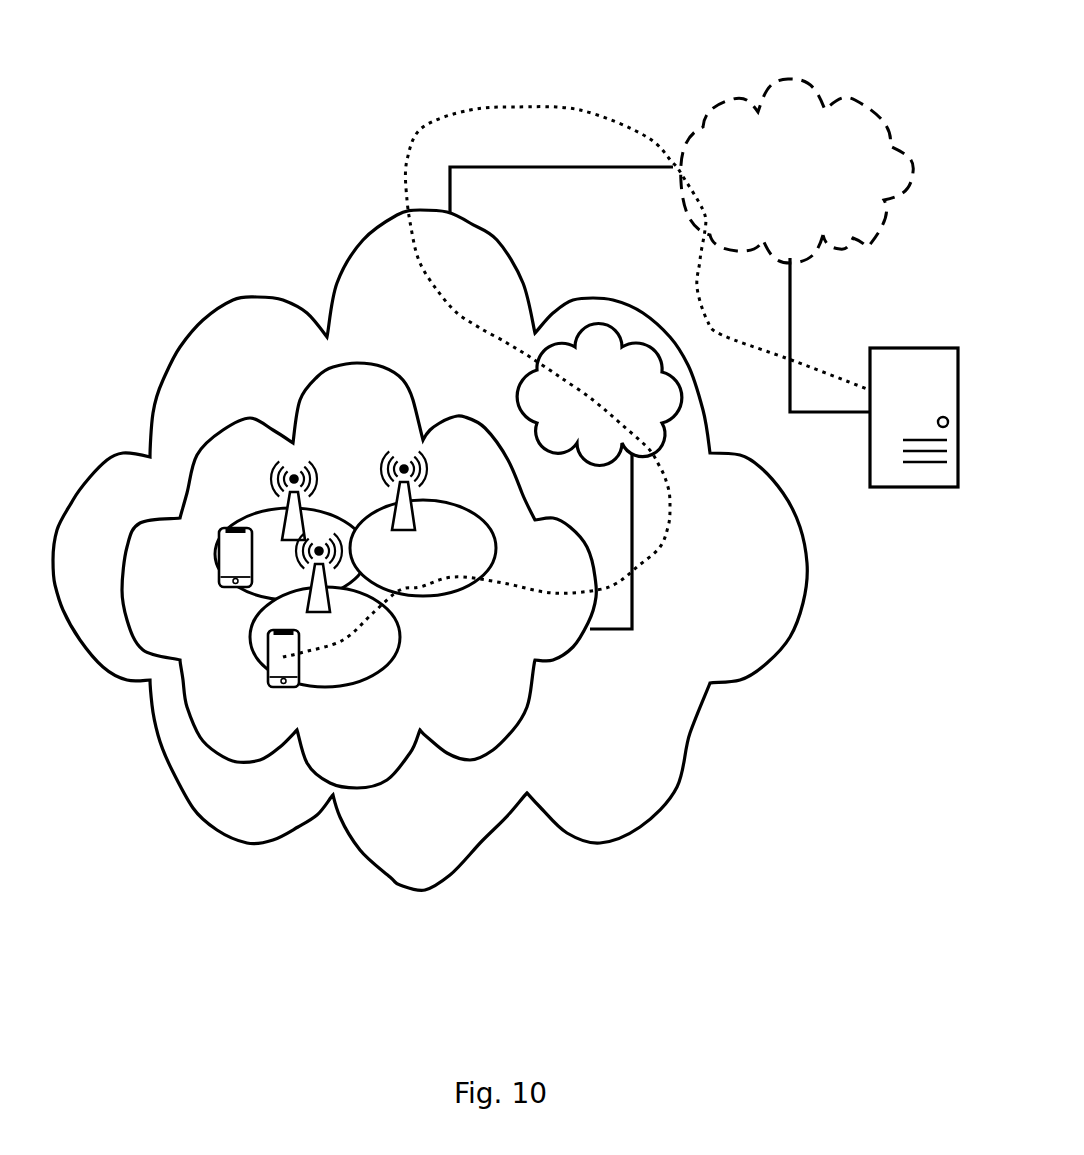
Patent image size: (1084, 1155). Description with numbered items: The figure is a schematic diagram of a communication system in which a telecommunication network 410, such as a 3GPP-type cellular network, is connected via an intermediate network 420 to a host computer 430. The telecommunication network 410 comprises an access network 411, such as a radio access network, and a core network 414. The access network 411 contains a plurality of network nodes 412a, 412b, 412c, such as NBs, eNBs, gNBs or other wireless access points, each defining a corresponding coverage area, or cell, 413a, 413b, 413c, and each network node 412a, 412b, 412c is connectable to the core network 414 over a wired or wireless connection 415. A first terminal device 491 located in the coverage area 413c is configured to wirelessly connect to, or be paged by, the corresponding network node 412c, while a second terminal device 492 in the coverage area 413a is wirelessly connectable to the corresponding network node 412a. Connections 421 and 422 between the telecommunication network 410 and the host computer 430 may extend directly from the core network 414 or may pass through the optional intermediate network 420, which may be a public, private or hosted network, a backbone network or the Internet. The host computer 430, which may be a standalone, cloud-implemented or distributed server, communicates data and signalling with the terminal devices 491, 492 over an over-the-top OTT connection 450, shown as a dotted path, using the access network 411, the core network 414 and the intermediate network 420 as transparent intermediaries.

The telecommunication network 410 is at (419, 321).
The access network 411 is at (373, 429).
The network node 412a is at (333, 598).
The network node 412b is at (420, 487).
The network node 412c is at (258, 478).
The coverage area 413a is at (397, 647).
The coverage area 413b is at (460, 592).
The coverage area 413c is at (267, 513).
The core network 414 is at (624, 380).
The wired or wireless connection 415 is at (633, 593).
The intermediate network 420 is at (815, 184).
The connection 421 is at (577, 167).
The connection 422 is at (825, 413).
The host computer 430 is at (933, 490).
The OTT connection 450 is at (435, 128).
The first terminal device 491 is at (232, 582).
The second terminal device 492 is at (273, 687).